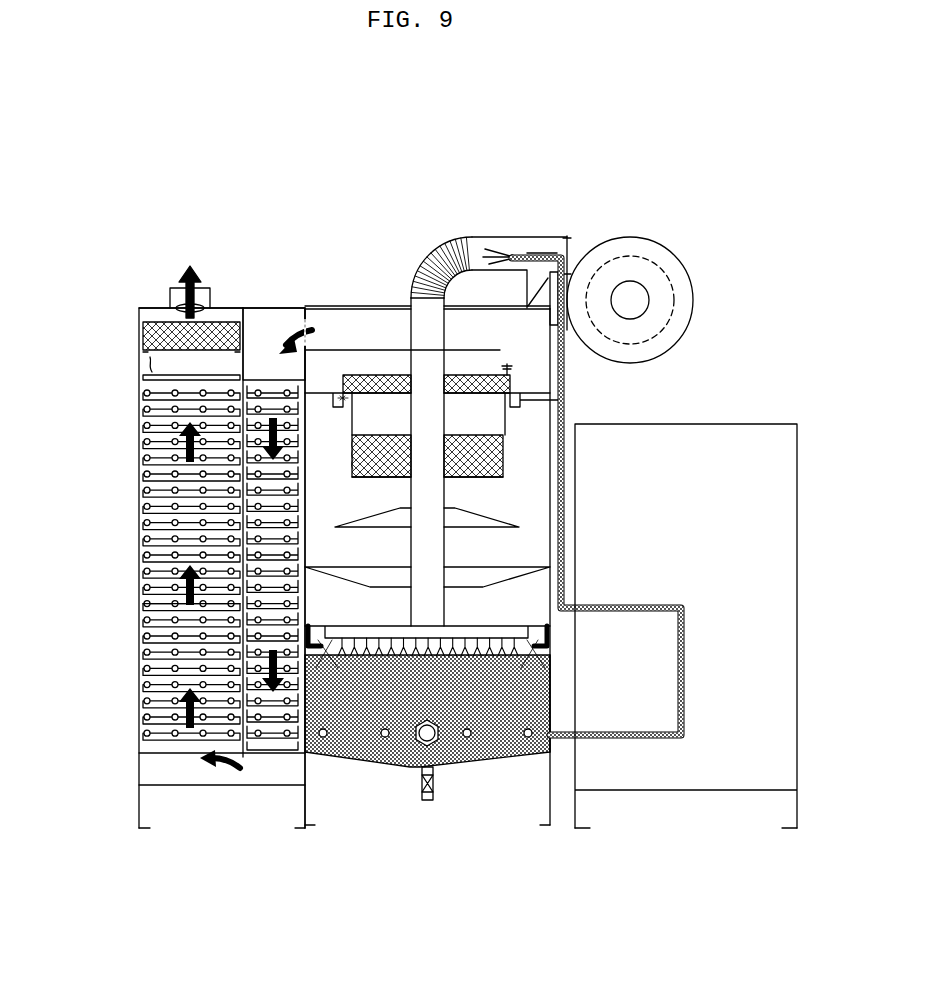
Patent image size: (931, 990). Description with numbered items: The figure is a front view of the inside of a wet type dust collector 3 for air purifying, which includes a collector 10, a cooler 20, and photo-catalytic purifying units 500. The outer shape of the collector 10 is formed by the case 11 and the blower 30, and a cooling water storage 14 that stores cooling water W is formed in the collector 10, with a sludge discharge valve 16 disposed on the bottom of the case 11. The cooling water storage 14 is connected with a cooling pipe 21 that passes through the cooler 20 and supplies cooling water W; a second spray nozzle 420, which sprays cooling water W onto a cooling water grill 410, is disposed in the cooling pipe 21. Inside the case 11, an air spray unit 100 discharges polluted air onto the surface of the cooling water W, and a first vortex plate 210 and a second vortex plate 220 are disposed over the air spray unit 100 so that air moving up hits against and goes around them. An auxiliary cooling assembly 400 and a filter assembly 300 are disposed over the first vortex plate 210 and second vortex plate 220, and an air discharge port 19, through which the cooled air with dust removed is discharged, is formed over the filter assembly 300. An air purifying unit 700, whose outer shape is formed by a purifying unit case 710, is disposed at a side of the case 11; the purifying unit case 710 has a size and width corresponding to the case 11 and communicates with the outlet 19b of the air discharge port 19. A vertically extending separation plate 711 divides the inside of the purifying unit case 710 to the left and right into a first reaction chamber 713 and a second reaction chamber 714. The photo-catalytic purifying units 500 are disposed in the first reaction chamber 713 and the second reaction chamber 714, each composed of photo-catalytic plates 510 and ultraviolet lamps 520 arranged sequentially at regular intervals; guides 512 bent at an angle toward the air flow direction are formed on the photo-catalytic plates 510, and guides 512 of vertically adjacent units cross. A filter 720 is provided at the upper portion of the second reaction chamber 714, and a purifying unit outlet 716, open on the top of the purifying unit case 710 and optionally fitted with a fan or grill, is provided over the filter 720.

The wet type dust collector 3 is at (163, 93).
The collector 10 is at (340, 302).
The case 11 is at (360, 306).
The cooling water storage 14 is at (558, 655).
The sludge discharge valve 16 is at (442, 785).
The air discharge port 19 is at (328, 318).
The outlet 19b is at (293, 317).
The cooler 20 is at (779, 414).
The cooling pipe 21 is at (564, 505).
The blower 30 is at (678, 235).
The air spray unit 100 is at (520, 620).
The first vortex plate 210 is at (360, 573).
The second vortex plate 220 is at (360, 520).
The filter assembly 300 is at (398, 318).
The auxiliary cooling assembly 400 is at (718, 396).
The cooling water grill 410 is at (505, 462).
The second spray nozzle 420 is at (560, 395).
The photo-catalytic purifying unit 500 is at (84, 598).
The photo-catalytic plate 510 is at (143, 583).
The guide 512 is at (155, 608).
The ultraviolet lamp 520 is at (143, 555).
The air purifying unit 700 is at (138, 702).
The purifying unit case 710 is at (217, 310).
The separation plate 711 is at (247, 317).
The first reaction chamber 713 is at (275, 318).
The second reaction chamber 714 is at (150, 362).
The purifying unit outlet 716 is at (178, 284).
The filter 720 is at (139, 325).
The cooling water W is at (365, 752).